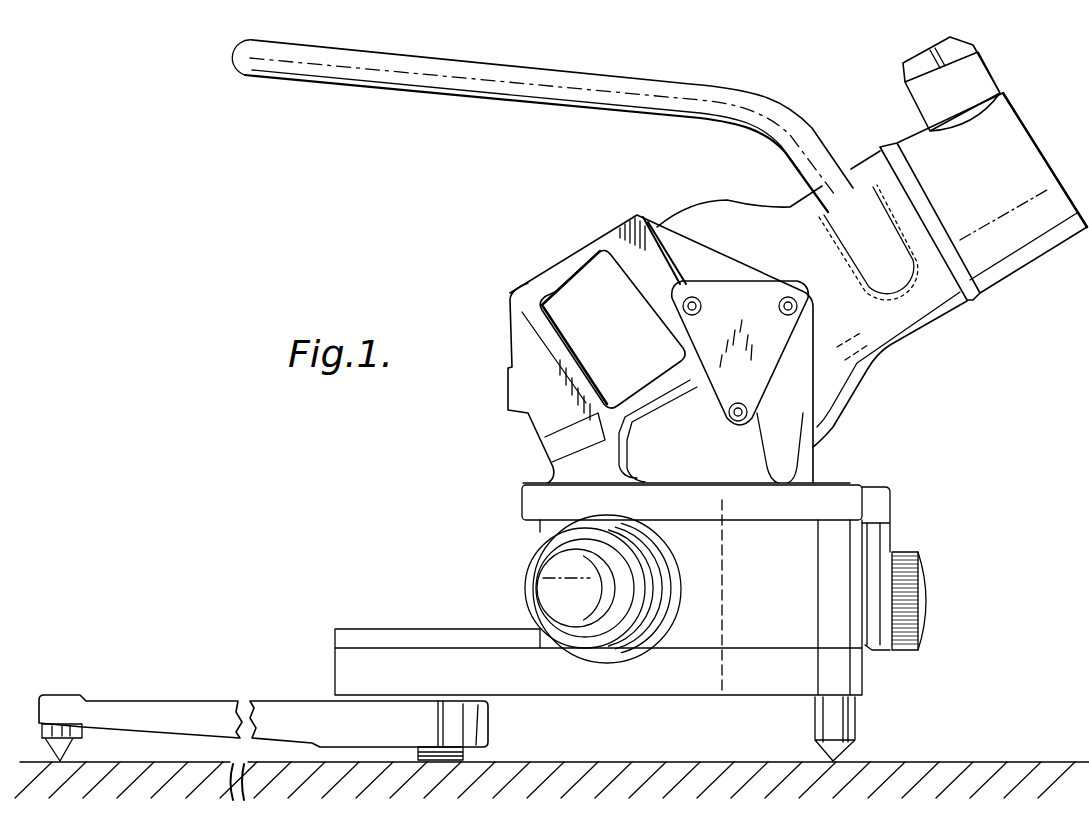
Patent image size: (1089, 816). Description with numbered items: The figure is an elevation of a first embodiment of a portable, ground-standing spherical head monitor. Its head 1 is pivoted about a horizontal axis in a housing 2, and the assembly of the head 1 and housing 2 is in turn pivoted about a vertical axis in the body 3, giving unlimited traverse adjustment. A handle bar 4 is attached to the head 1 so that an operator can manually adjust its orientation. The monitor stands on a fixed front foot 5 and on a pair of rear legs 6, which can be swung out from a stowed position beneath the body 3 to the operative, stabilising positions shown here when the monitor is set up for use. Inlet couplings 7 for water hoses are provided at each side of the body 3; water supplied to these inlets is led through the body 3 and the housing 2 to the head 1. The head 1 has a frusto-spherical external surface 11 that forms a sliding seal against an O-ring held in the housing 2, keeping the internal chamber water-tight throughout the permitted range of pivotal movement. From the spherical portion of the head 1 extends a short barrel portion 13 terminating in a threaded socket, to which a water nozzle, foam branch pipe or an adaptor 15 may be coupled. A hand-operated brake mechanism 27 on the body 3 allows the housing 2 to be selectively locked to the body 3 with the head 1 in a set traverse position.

The head 1 is at (748, 197).
The housing 2 is at (563, 254).
The body 3 is at (782, 594).
The handle bar 4 is at (515, 104).
The fixed front foot 5 is at (843, 720).
The rear legs 6 is at (225, 712).
The inlet couplings 7 is at (530, 580).
The frusto-spherical external surface 11 is at (716, 217).
The barrel portion 13 is at (907, 310).
The adaptor 15 is at (953, 151).
The hand-operated brake mechanism 27 is at (932, 560).